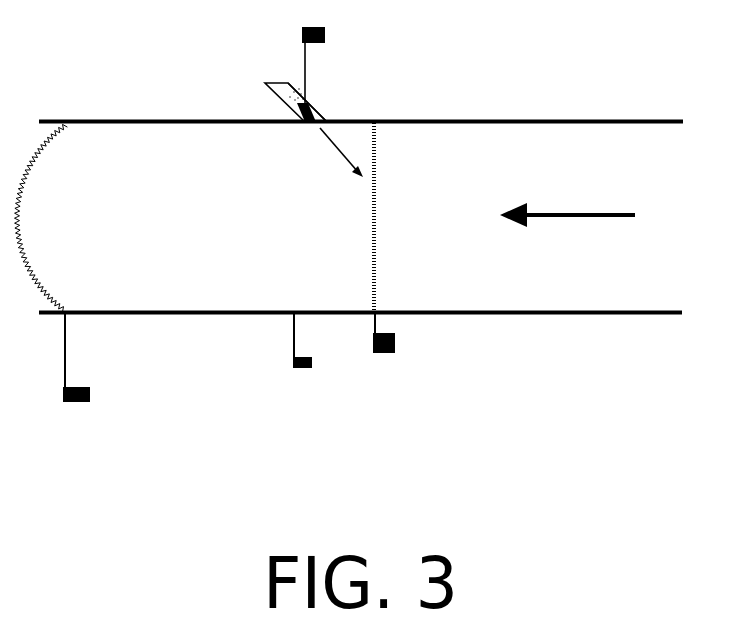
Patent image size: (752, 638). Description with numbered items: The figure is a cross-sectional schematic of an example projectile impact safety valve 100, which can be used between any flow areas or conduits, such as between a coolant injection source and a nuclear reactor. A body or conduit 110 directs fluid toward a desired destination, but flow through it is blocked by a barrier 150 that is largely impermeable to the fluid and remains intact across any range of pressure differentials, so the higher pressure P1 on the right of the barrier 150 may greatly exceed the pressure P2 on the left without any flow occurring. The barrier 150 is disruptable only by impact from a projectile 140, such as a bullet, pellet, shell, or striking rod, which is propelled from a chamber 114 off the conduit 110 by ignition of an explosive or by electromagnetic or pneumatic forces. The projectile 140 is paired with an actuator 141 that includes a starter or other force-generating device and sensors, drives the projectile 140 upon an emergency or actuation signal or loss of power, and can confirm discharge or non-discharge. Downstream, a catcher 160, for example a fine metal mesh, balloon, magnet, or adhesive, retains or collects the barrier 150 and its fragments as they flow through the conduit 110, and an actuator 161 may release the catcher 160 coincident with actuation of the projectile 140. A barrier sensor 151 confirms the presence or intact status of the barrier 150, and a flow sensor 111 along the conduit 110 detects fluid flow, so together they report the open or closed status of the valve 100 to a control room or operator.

The projectile impact safety valve 100 is at (655, 53).
The conduit 110 is at (633, 314).
The flow sensor 111 is at (297, 370).
The chamber 114 is at (320, 106).
The projectile 140 is at (305, 128).
The actuator 141 is at (302, 35).
The barrier 150 is at (374, 208).
The barrier sensor 151 is at (395, 342).
The catcher 160 is at (65, 122).
The actuator 161 is at (90, 390).